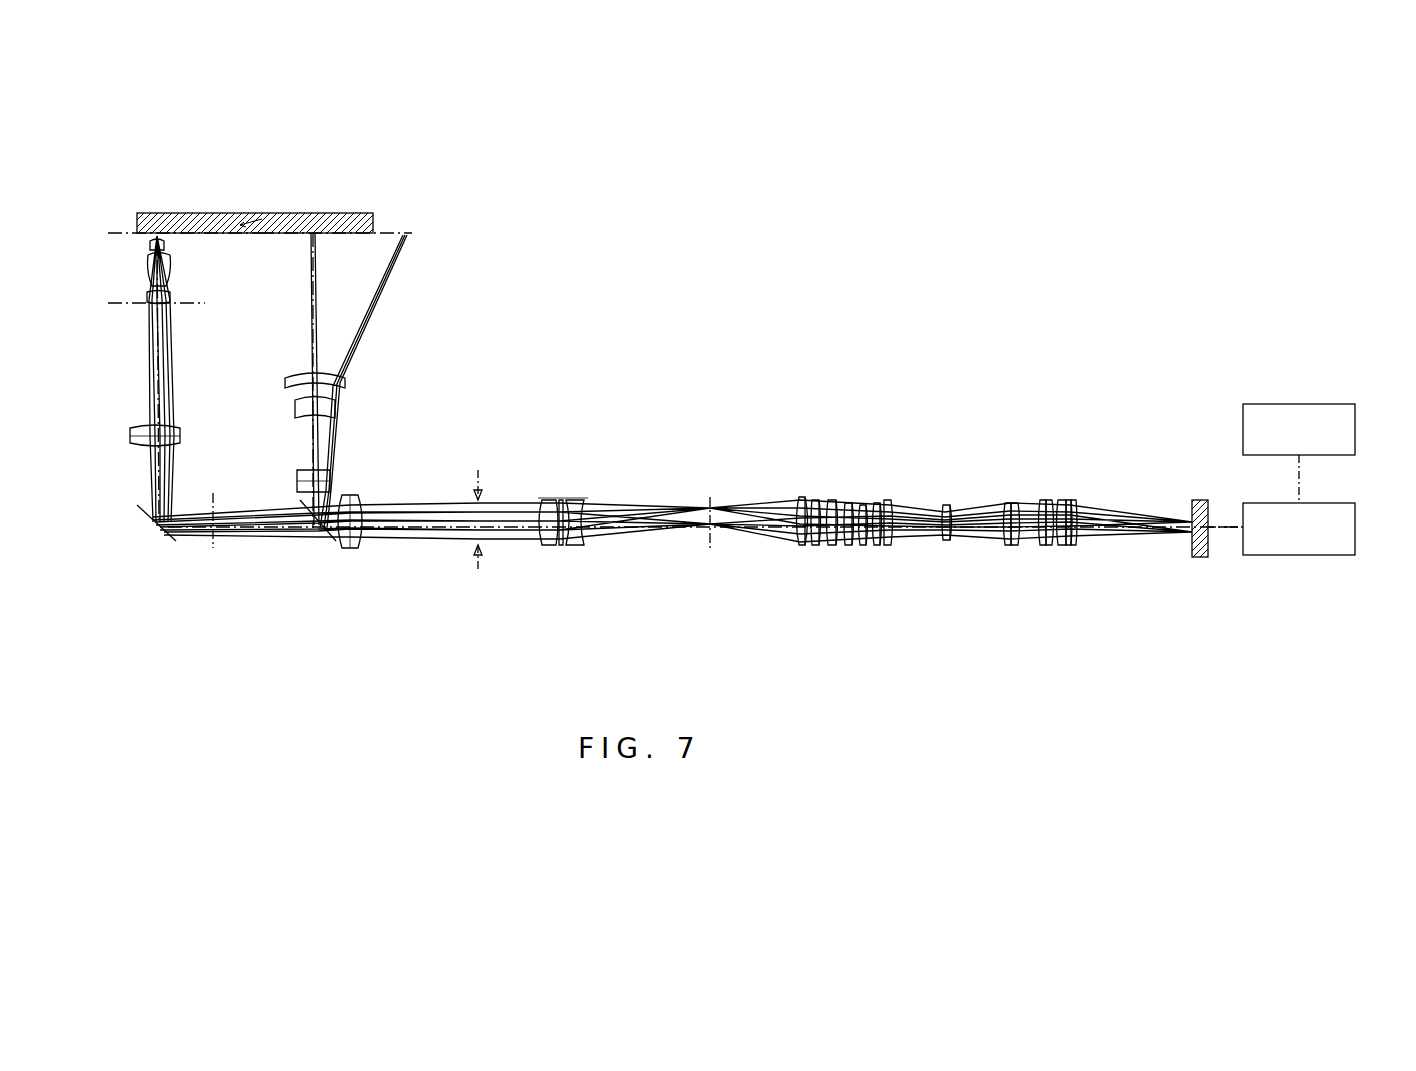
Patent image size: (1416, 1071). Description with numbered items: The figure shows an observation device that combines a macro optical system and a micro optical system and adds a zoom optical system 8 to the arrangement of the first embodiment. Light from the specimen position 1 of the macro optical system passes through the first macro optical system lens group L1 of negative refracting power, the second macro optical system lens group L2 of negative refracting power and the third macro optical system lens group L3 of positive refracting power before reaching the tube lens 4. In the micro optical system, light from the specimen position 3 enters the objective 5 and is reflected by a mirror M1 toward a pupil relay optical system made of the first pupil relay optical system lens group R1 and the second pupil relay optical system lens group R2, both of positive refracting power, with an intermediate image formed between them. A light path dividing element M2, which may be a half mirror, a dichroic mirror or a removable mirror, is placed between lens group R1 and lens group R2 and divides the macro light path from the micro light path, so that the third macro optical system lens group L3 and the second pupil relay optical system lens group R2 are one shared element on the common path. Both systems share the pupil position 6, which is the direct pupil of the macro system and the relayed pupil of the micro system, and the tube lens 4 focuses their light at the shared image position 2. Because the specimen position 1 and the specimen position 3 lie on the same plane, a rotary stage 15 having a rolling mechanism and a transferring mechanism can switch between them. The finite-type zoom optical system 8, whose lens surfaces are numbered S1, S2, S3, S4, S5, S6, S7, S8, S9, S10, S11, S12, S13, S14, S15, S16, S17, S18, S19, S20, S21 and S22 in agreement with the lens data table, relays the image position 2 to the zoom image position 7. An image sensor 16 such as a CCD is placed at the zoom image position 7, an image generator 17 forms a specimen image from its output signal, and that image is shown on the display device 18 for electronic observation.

The specimen position of the macro optical system 1 is at (412, 236).
The image position 2 is at (709, 498).
The specimen position of the micro optical system 3 is at (128, 233).
The tube lens 4 is at (588, 550).
The objective 5 is at (135, 235).
The pupil position 6 is at (479, 480).
The zoom image position 7 is at (1188, 544).
The zoom optical system 8 is at (1085, 492).
The rotary stage 15 is at (258, 213).
The image sensor 16 is at (1194, 503).
The image generator 17 is at (1355, 523).
The display device 18 is at (1355, 427).
The first pupil relay optical system lens group R1 is at (132, 438).
The second pupil relay optical system lens group R2 is at (352, 549).
The first macro optical system lens group L1 is at (350, 372).
The second macro optical system lens group L2 is at (333, 476).
The third macro optical system lens group L3 is at (361, 550).
The mirror M1 is at (166, 538).
The light path dividing element M2 is at (318, 542).
The surface 1 of the zoom optical system S1 is at (797, 548).
The surface 2 of the zoom optical system S2 is at (806, 548).
The surface 3 of the zoom optical system S3 is at (813, 548).
The surface 4 of the zoom optical system S4 is at (820, 548).
The surface 5 of the zoom optical system S5 is at (828, 548).
The surface 6 of the zoom optical system S6 is at (836, 548).
The surface 7 of the zoom optical system S7 is at (845, 548).
The surface 8 of the zoom optical system S8 is at (852, 548).
The surface 9 of the zoom optical system S9 is at (860, 548).
The surface 10 of the zoom optical system S10 is at (866, 548).
The surface 11 of the zoom optical system S11 is at (874, 548).
The surface 12 of the zoom optical system S12 is at (880, 548).
The surface 13 of the zoom optical system S13 is at (890, 548).
The surface 14 of the zoom optical system S14 is at (943, 544).
The surface 15 of the zoom optical system S15 is at (950, 544).
The surface 16 of the zoom optical system S16 is at (1005, 548).
The surface 17 of the zoom optical system S17 is at (1018, 548).
The surface 18 of the zoom optical system S18 is at (1040, 548).
The surface 19 of the zoom optical system S19 is at (1052, 548).
The surface 20 of the zoom optical system S20 is at (1060, 548).
The surface 21 of the zoom optical system S21 is at (1068, 548).
The surface 22 of the zoom optical system S22 is at (1076, 548).